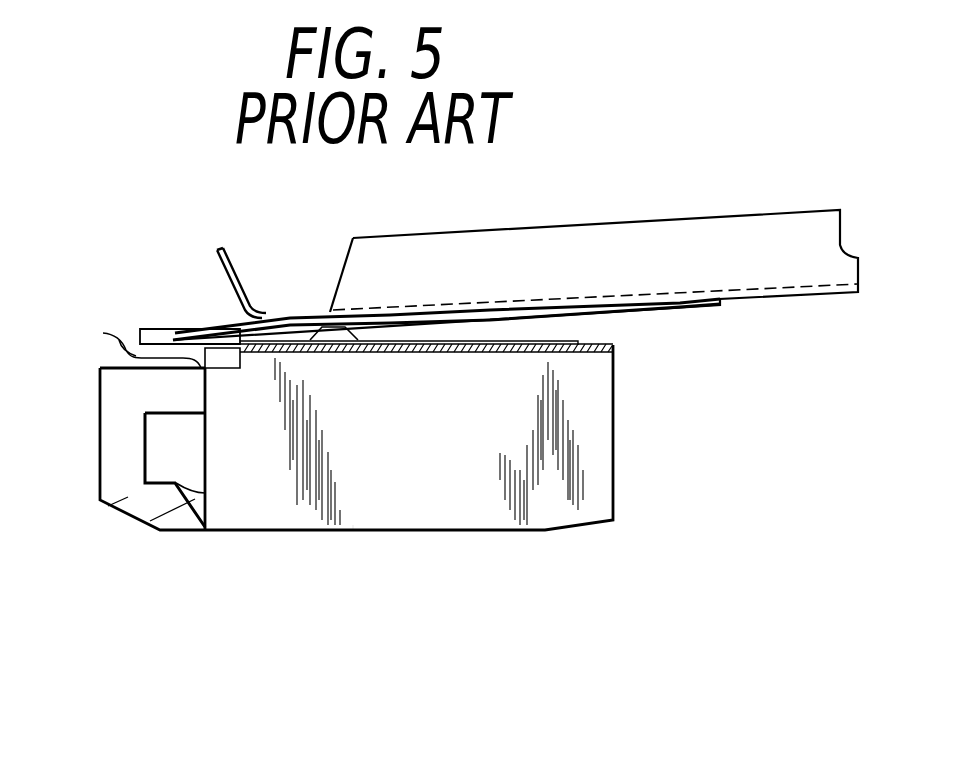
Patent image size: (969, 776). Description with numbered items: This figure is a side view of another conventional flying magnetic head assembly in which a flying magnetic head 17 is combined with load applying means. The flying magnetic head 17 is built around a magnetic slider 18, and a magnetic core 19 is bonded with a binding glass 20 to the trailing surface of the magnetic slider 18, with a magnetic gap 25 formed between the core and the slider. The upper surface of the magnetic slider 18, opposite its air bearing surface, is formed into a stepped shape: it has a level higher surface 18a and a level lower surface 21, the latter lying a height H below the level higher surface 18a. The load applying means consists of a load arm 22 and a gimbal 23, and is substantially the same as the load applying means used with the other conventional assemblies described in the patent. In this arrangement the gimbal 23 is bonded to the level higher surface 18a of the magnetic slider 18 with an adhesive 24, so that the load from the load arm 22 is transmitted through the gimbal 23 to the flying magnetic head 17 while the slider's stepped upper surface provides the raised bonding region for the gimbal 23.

The flying magnetic head 17 is at (248, 510).
The magnetic slider 18 is at (302, 510).
The level higher surface 18a is at (403, 352).
The magnetic core 19 is at (128, 497).
The binding glass 20 is at (147, 522).
The level lower surface 21 is at (103, 333).
The load arm 22 is at (415, 247).
The gimbal 23 is at (152, 332).
The adhesive 24 is at (457, 354).
The magnetic gap 25 is at (119, 340).